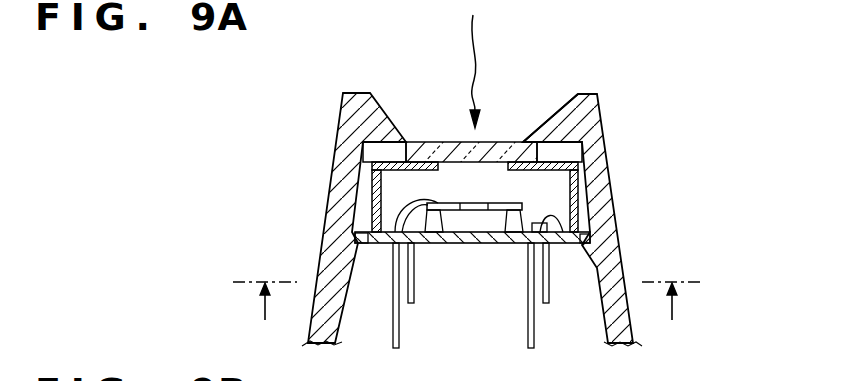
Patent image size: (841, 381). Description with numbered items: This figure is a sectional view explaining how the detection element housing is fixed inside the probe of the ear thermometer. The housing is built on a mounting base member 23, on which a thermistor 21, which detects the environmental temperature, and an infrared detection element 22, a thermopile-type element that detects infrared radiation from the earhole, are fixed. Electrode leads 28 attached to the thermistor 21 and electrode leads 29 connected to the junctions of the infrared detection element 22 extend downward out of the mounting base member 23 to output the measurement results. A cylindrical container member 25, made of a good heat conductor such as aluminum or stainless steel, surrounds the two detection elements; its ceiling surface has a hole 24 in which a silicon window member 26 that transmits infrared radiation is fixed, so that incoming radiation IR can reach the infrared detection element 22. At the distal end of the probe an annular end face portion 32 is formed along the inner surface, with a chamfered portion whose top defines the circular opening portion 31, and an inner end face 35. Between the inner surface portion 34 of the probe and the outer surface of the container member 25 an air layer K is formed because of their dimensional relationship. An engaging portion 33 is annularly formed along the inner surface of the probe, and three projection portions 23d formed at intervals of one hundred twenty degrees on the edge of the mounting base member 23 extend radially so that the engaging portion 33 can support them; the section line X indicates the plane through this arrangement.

The thermistor 21 is at (567, 244).
The infrared detection element 22 is at (482, 235).
The mounting base member 23 is at (453, 246).
The projection portions 23d is at (342, 238).
The hole 24 is at (365, 163).
The container member 25 is at (577, 205).
The window member 26 is at (497, 143).
The electrode leads 28 is at (531, 308).
The electrode leads 29 is at (400, 318).
The opening portion 31 is at (450, 137).
The end face portion 32 is at (552, 133).
The engaging portion 33 is at (590, 238).
The inner surface portion 34 is at (343, 302).
The inner end face 35 is at (552, 152).
The air layer K is at (365, 200).
The infrared light IR is at (476, 32).
The section line X is at (467, 302).